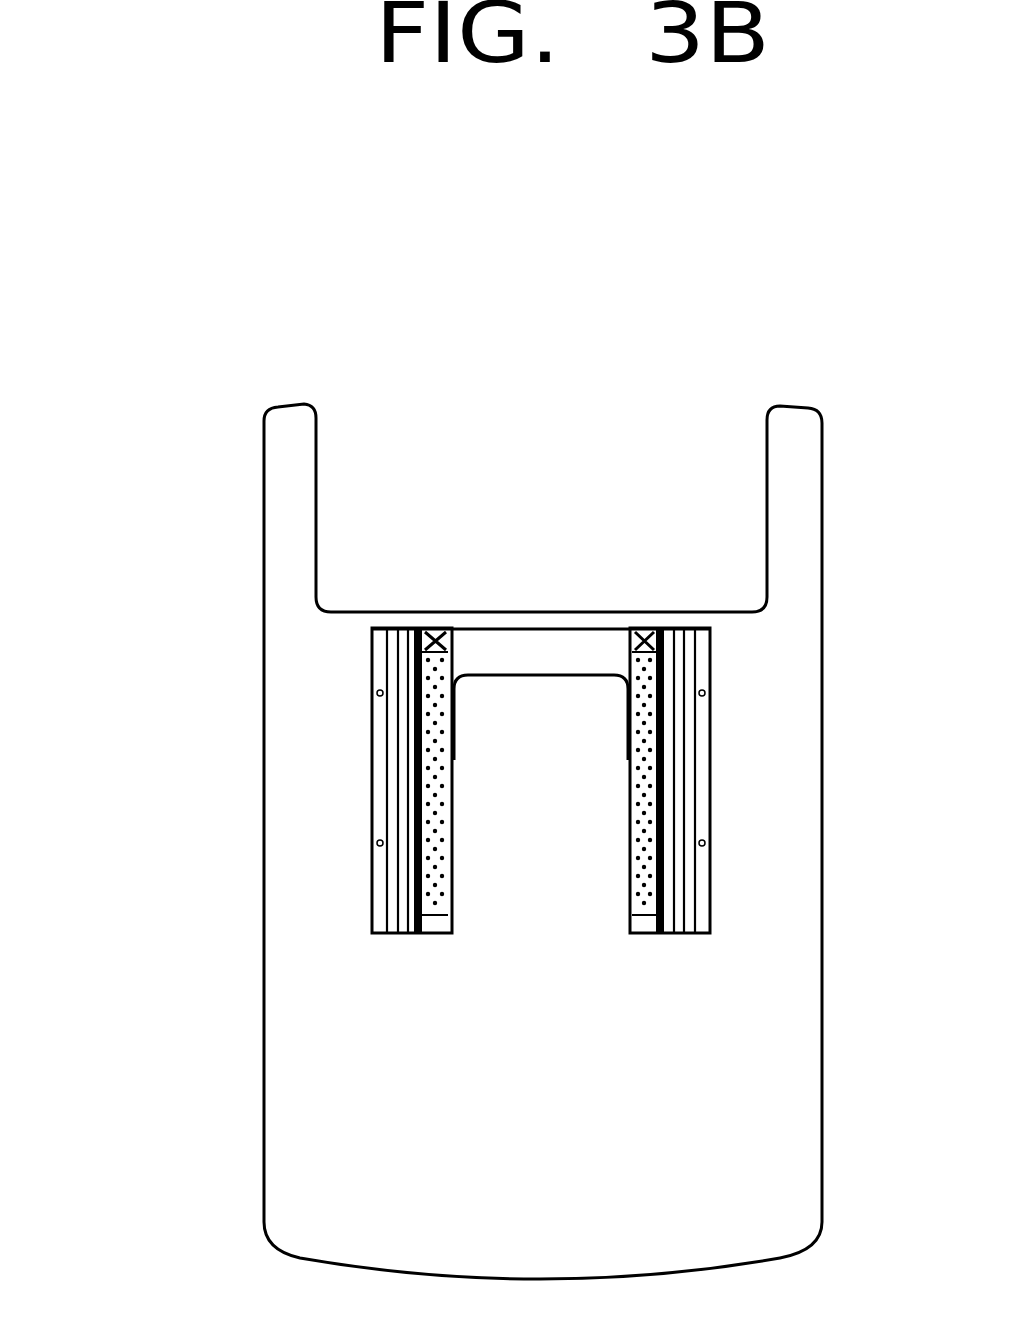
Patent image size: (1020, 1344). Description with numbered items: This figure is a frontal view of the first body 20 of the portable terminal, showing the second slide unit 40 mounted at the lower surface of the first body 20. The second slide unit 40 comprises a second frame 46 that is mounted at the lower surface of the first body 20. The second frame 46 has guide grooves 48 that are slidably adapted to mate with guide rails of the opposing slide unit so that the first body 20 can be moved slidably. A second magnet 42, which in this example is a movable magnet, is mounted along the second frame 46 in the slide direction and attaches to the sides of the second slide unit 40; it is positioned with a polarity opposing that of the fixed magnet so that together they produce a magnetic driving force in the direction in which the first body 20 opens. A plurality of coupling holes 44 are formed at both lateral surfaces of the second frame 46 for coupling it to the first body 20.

The first body 20 is at (280, 527).
The second slide unit 40 is at (362, 893).
The second magnet 42 is at (630, 830).
The coupling holes 44 is at (699, 692).
The second frame 46 is at (522, 648).
The guide grooves 48 is at (393, 862).